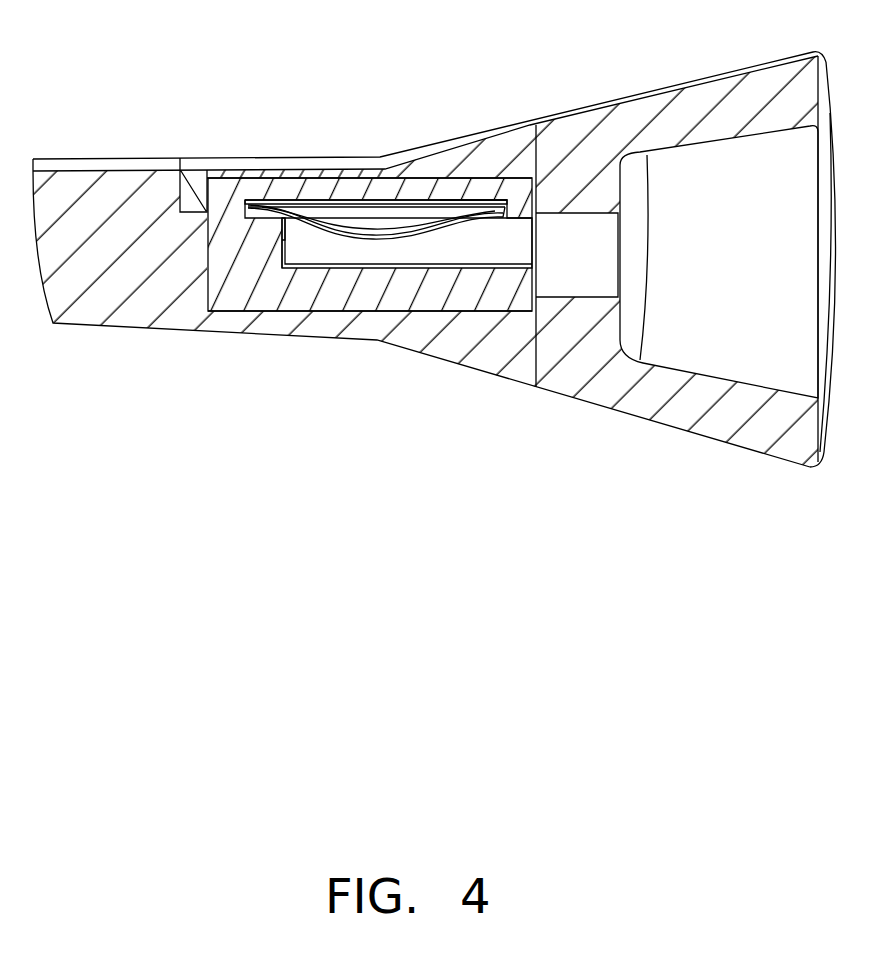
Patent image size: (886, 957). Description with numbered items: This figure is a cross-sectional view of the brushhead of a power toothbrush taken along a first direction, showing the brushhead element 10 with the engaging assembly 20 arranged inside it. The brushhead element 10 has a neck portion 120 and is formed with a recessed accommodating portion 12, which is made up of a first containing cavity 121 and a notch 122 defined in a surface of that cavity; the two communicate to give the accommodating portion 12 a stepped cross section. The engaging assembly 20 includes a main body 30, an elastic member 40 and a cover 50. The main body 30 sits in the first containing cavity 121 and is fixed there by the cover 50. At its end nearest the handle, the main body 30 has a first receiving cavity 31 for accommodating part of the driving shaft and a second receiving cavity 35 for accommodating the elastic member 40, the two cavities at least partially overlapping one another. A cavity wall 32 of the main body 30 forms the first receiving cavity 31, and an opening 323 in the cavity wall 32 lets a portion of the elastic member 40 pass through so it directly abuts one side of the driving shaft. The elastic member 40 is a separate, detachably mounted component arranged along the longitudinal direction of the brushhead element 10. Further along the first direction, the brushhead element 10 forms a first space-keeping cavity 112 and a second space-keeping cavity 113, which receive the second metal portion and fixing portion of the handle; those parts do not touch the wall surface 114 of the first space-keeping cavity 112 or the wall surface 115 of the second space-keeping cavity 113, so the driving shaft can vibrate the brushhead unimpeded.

The brushhead element 10 is at (150, 92).
The accommodating portion 12 is at (183, 389).
The neck portion 120 is at (110, 185).
The first containing cavity 121 is at (218, 330).
The notch 122 is at (182, 200).
The engaging assembly 20 is at (410, 93).
The main body 30 is at (233, 190).
The first receiving cavity 31 is at (424, 248).
The cavity wall 32 is at (392, 267).
The opening 323 is at (283, 220).
The second receiving cavity 35 is at (473, 203).
The elastic member 40 is at (371, 224).
The cover 50 is at (450, 167).
The first space-keeping cavity 112 is at (583, 278).
The second space-keeping cavity 113 is at (733, 345).
The wall surface of the first space-keeping cavity 114 is at (577, 213).
The wall surface of the second space-keeping cavity 115 is at (712, 137).